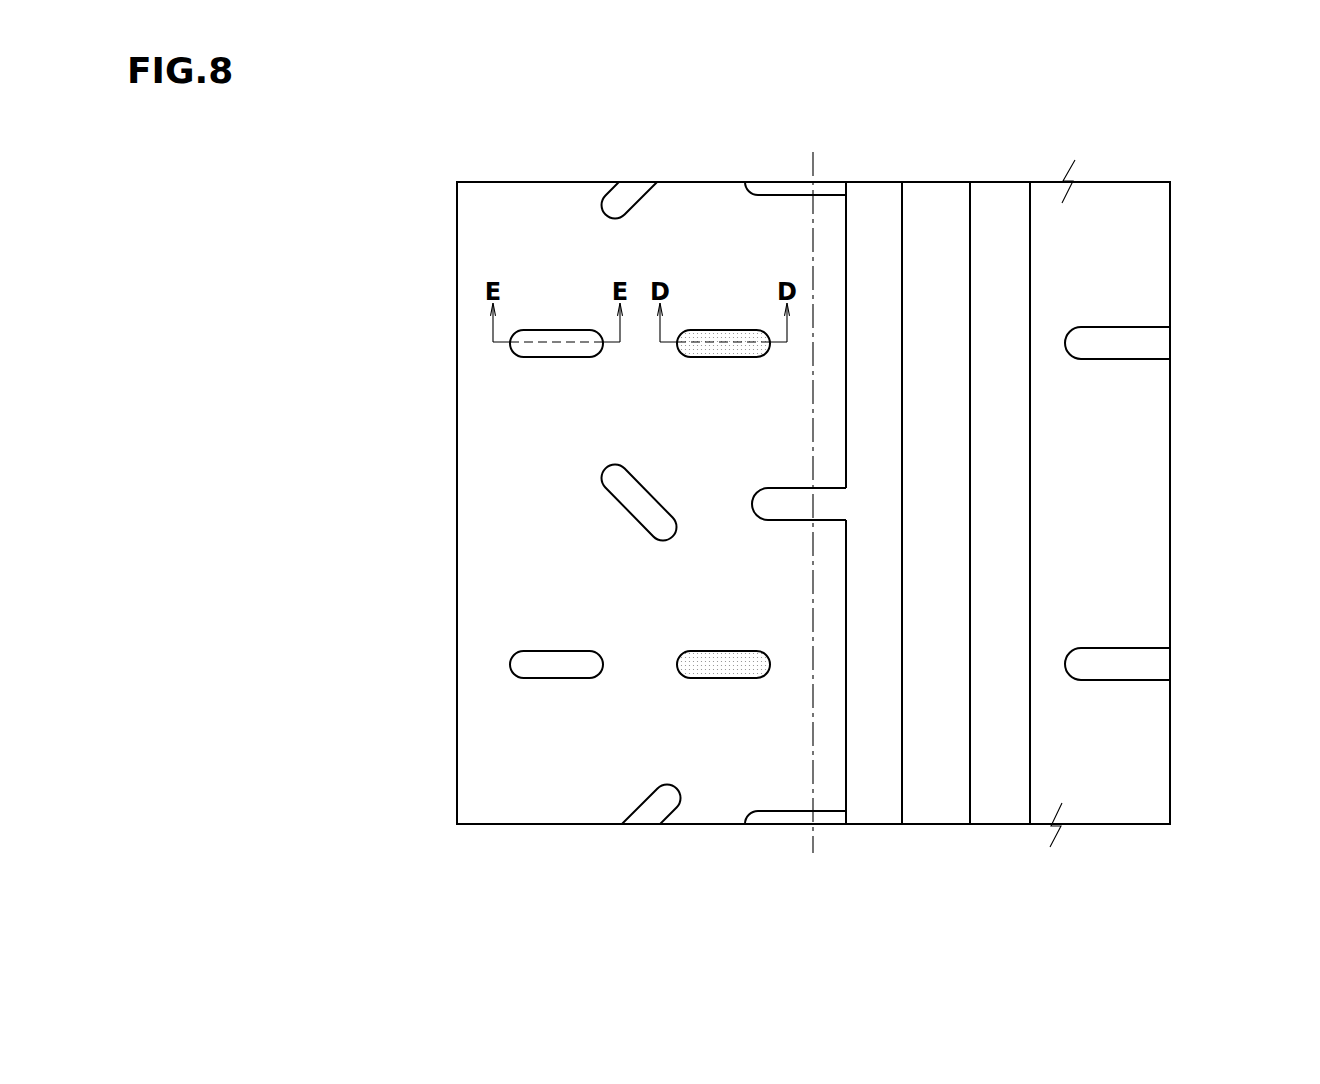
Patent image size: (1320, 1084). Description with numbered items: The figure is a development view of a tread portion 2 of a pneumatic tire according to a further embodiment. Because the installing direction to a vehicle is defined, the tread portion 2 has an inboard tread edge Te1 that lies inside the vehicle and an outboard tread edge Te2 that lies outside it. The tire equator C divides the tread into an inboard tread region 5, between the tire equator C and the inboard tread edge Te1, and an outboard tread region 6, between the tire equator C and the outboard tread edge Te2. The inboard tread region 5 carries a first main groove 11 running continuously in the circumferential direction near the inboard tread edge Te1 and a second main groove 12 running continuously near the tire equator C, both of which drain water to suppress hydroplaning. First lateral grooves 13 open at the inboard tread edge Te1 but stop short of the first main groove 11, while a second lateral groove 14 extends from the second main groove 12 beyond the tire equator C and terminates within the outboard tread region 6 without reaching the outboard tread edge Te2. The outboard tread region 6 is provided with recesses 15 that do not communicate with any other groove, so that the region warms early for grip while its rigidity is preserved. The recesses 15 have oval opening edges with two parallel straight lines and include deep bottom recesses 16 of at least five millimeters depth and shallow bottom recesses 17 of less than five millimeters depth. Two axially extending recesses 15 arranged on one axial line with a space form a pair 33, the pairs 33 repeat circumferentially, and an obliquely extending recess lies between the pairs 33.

The tread portion 2 is at (778, 181).
The inboard tread region 5 is at (927, 181).
The outboard tread region 6 is at (729, 181).
The first main groove 11 is at (997, 229).
The second main groove 12 is at (871, 235).
The first lateral groove 13 is at (1131, 345).
The second lateral groove 14 is at (793, 500).
The recess 15 is at (527, 504).
The deep bottom recess 16 is at (722, 332).
The shallow bottom recess 17 is at (551, 332).
The pair of recesses 33 is at (527, 504).
The tire equator C is at (814, 489).
The inboard tread edge Te1 is at (1170, 232).
The outboard tread edge Te2 is at (457, 232).